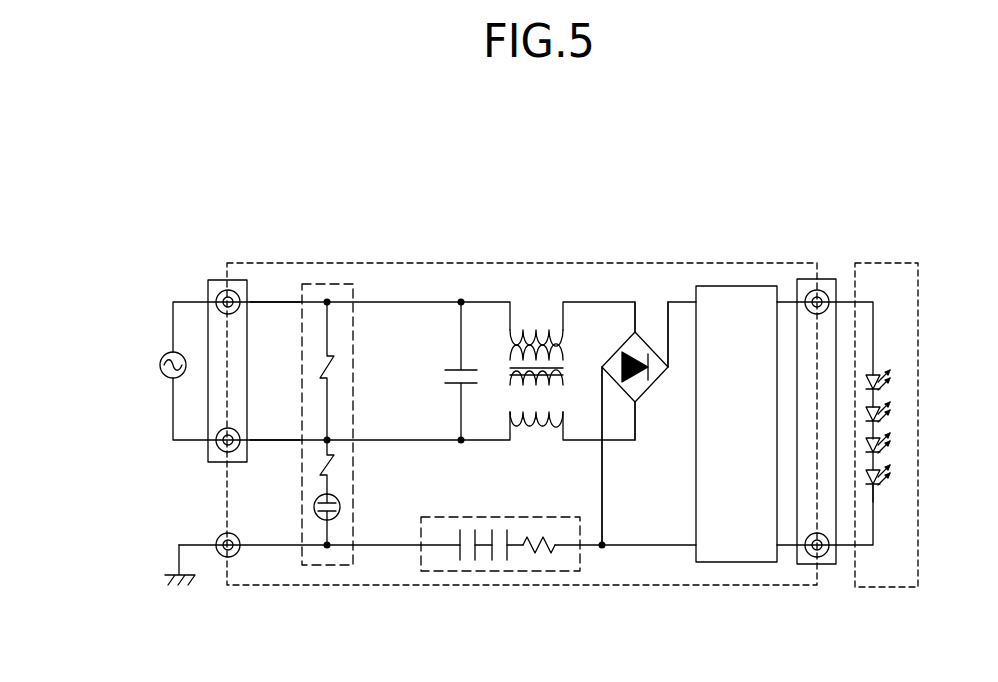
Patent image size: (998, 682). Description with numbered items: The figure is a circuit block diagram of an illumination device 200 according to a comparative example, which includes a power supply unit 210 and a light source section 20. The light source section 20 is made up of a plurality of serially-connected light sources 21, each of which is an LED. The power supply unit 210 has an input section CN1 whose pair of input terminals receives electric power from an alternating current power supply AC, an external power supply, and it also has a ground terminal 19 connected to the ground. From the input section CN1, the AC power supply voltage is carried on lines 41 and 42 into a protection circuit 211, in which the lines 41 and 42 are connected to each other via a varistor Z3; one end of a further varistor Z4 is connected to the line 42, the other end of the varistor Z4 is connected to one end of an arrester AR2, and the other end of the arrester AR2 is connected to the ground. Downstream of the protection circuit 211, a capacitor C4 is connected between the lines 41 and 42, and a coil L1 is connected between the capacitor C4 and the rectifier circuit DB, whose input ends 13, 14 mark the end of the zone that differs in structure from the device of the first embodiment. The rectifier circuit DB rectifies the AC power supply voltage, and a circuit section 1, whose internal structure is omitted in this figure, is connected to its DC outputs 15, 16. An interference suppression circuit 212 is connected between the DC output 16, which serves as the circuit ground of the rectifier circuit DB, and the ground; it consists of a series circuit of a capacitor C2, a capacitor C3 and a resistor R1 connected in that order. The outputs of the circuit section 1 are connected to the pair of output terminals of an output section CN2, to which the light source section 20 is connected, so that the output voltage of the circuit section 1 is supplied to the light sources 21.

The illumination device 200 is at (207, 182).
The alternating current power supply AC is at (165, 356).
The power supply unit 210 is at (300, 264).
The input section CN1 is at (214, 280).
The ground terminal 19 is at (218, 537).
The line 41 is at (278, 306).
The line 42 is at (273, 437).
The protection circuit 211 is at (331, 284).
The varistor Z3 is at (343, 370).
The varistor Z4 is at (318, 465).
The arrester AR2 is at (314, 507).
The capacitor C4 is at (441, 378).
The coil L1 is at (537, 320).
The rectifier circuit DB is at (611, 360).
The input end 13 is at (635, 322).
The input end 14 is at (638, 424).
The DC output 15 is at (666, 320).
The DC output 16 is at (605, 468).
The interference suppression circuit 212 is at (421, 556).
The capacitor C2 is at (468, 560).
The capacitor C3 is at (498, 560).
The resistor R1 is at (535, 556).
The circuit section 1 is at (754, 286).
The output section CN2 is at (825, 280).
The light source section 20 is at (886, 263).
The light source 21 is at (880, 370).